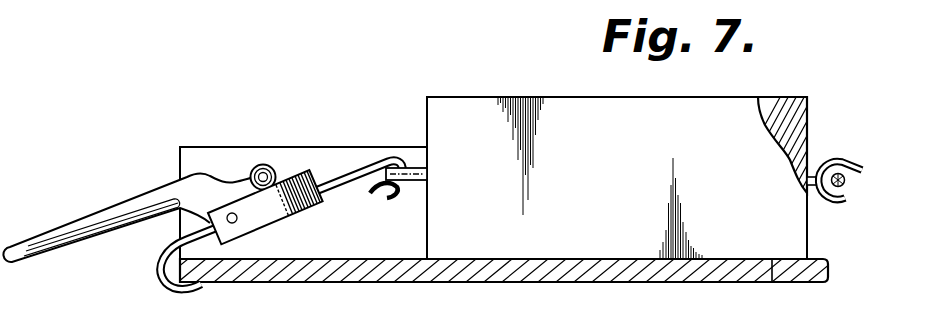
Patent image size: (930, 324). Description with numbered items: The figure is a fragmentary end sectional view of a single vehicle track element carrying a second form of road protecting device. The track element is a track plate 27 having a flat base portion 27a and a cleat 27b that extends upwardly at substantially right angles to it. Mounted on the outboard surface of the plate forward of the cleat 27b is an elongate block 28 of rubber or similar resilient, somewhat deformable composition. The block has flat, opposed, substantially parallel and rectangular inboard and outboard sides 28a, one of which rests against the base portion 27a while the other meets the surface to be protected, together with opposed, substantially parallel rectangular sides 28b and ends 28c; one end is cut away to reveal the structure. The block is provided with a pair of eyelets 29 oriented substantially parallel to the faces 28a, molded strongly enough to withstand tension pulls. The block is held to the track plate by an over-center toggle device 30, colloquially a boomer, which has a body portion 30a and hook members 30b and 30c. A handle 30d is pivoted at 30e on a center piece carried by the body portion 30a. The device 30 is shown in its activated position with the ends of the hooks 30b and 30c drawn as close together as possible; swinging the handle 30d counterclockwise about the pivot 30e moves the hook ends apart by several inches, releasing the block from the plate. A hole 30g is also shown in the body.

The track plate 27 is at (469, 286).
The base portion 27a is at (733, 283).
The cleat 27b is at (332, 156).
The block 28 is at (779, 84).
The inboard and outboard sides 28a is at (768, 285).
The sides 28b is at (427, 103).
The ends 28c is at (485, 83).
The eyelets 29 is at (381, 188).
The over-center toggle device 30 is at (320, 211).
The body portion 30a is at (288, 210).
The hook member 30b is at (279, 165).
The hook member 30c is at (159, 270).
The handle 30d is at (158, 196).
The pivot 30e is at (270, 178).
The hole 30g is at (238, 224).